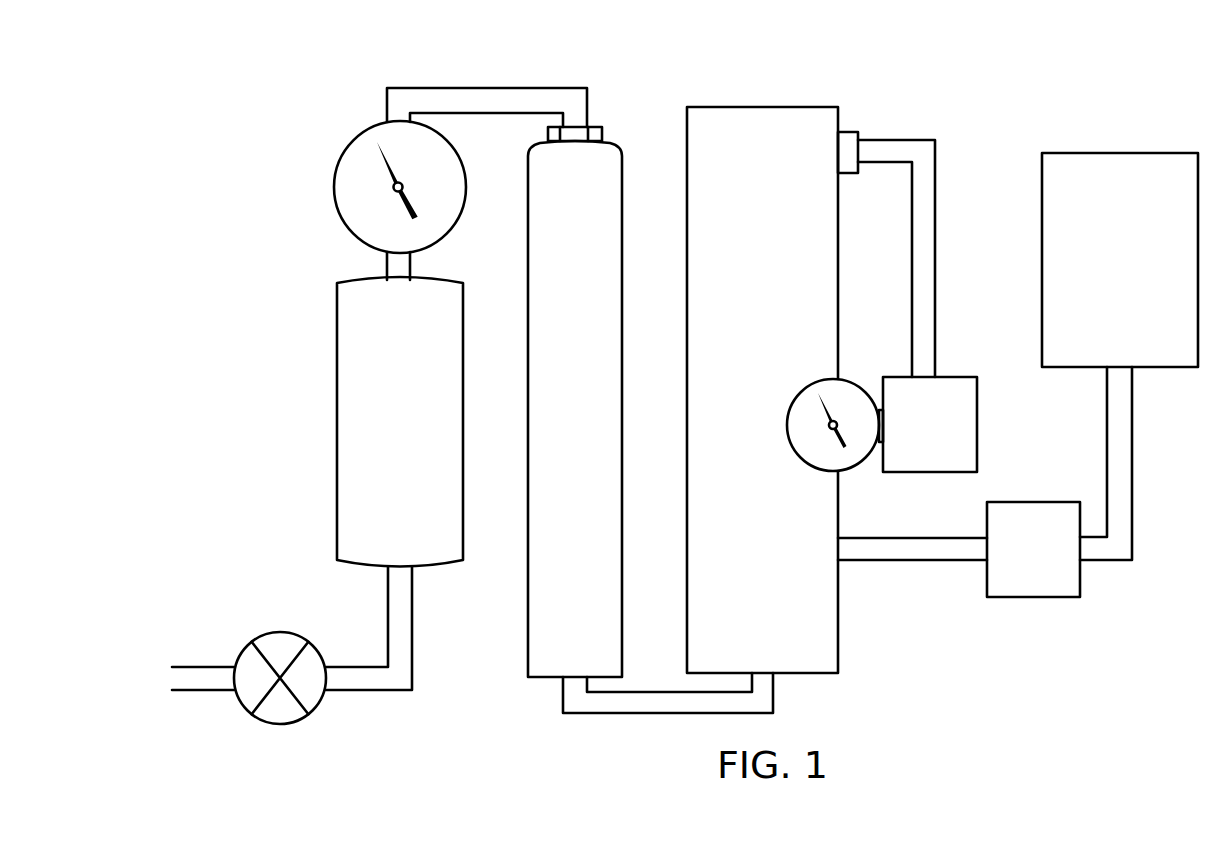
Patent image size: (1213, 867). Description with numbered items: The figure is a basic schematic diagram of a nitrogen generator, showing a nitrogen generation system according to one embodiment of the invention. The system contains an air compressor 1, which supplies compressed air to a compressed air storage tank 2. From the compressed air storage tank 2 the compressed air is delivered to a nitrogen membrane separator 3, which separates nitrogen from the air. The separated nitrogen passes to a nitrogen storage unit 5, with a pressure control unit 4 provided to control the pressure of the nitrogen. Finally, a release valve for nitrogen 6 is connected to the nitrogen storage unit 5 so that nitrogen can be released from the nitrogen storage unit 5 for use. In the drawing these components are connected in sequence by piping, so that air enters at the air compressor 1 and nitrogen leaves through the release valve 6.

The air compressor 1 is at (1130, 149).
The compressed air storage tank 2 is at (781, 103).
The nitrogen membrane separator 3 is at (519, 614).
The pressure control unit 4 is at (324, 172).
The nitrogen storage unit 5 is at (327, 423).
The release valve for nitrogen 6 is at (238, 642).